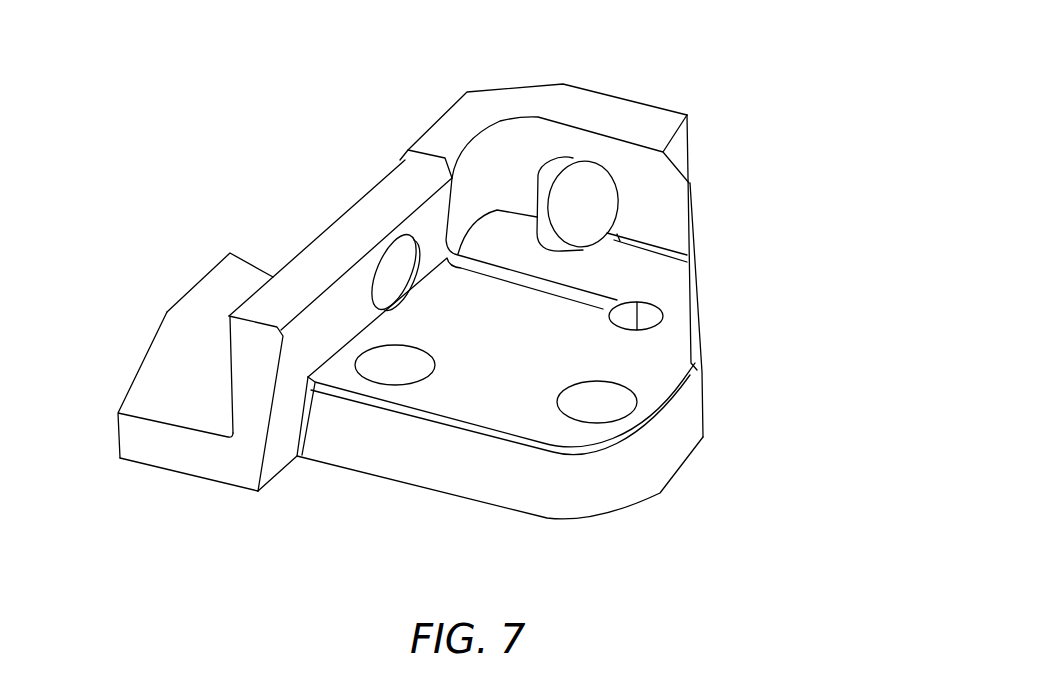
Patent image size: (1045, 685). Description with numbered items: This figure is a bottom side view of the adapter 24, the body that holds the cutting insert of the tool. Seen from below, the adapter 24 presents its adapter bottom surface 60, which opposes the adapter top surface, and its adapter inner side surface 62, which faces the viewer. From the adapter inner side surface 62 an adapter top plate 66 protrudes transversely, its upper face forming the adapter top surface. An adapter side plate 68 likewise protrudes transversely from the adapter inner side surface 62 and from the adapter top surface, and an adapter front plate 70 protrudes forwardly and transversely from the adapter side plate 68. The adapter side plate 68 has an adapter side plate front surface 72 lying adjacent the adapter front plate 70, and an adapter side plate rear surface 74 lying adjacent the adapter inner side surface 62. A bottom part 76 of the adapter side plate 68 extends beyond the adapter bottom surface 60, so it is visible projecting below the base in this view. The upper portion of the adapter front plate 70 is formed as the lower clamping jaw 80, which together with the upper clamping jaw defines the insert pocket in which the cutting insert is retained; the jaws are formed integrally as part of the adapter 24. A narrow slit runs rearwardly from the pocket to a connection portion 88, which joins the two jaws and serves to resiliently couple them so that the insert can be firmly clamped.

The adapter 24 is at (230, 122).
The adapter bottom surface 60 is at (422, 472).
The adapter inner side surface 62 is at (663, 362).
The adapter top plate 66 is at (693, 202).
The adapter side plate 68 is at (372, 205).
The adapter front plate 70 is at (200, 330).
The adapter side plate front surface 72 is at (228, 377).
The adapter side plate rear surface 74 is at (290, 373).
The bottom part of the adapter side plate 76 is at (230, 462).
The lower clamping jaw 80 is at (228, 280).
The connection portion 88 is at (648, 314).